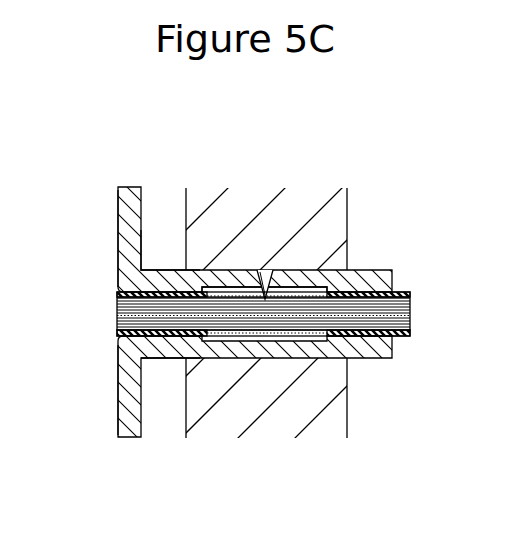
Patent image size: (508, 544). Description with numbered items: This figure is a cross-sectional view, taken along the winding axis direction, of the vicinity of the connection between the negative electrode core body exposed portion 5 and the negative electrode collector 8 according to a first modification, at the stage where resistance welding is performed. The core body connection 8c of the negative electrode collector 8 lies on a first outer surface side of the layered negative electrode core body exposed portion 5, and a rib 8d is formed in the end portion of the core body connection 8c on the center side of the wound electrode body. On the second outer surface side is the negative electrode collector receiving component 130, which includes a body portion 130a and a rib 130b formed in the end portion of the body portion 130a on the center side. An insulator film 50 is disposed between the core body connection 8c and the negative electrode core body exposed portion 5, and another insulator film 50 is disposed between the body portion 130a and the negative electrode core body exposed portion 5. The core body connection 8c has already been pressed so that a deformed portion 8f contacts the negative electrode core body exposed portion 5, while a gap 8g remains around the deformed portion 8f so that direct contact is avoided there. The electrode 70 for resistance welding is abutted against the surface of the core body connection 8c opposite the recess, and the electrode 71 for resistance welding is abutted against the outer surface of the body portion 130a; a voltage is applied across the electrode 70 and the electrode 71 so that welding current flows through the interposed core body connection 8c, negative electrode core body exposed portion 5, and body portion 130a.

The negative electrode core body exposed portion 5 is at (392, 317).
The negative electrode collector 8 is at (363, 260).
The core body connection 8c is at (167, 284).
The rib 8d is at (127, 218).
The deformed portion 8f is at (273, 276).
The gap 8g is at (235, 297).
The insulator film 50 is at (407, 291).
The electrode for resistance welding 70 is at (268, 225).
The electrode for resistance welding 71 is at (265, 398).
The negative electrode collector receiving component 130 is at (367, 370).
The body portion 130a is at (162, 343).
The rib 130b is at (127, 420).